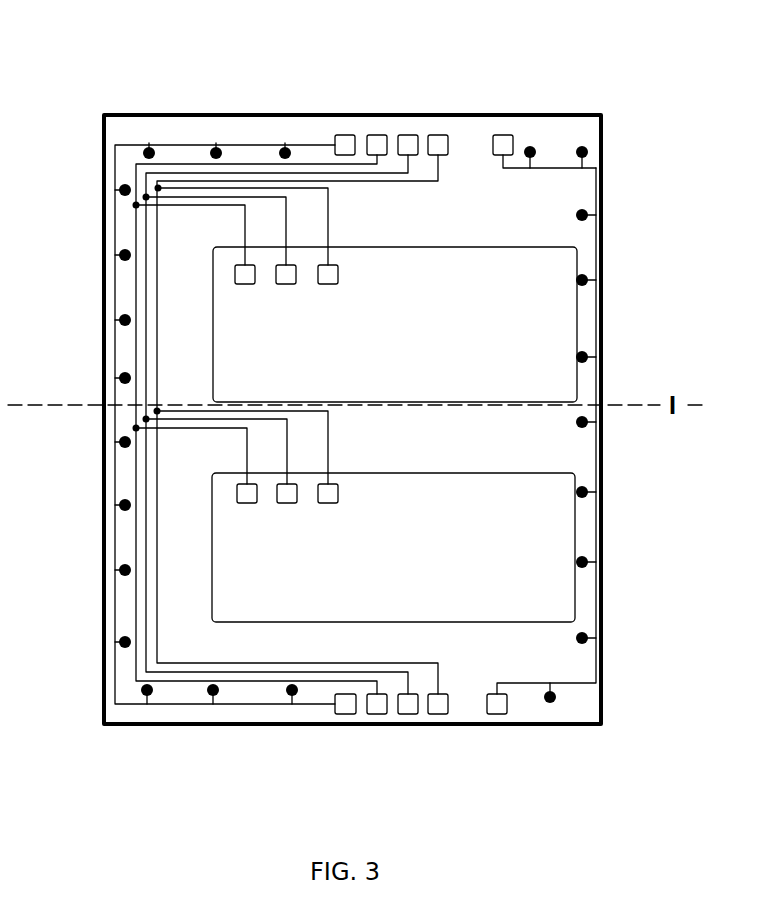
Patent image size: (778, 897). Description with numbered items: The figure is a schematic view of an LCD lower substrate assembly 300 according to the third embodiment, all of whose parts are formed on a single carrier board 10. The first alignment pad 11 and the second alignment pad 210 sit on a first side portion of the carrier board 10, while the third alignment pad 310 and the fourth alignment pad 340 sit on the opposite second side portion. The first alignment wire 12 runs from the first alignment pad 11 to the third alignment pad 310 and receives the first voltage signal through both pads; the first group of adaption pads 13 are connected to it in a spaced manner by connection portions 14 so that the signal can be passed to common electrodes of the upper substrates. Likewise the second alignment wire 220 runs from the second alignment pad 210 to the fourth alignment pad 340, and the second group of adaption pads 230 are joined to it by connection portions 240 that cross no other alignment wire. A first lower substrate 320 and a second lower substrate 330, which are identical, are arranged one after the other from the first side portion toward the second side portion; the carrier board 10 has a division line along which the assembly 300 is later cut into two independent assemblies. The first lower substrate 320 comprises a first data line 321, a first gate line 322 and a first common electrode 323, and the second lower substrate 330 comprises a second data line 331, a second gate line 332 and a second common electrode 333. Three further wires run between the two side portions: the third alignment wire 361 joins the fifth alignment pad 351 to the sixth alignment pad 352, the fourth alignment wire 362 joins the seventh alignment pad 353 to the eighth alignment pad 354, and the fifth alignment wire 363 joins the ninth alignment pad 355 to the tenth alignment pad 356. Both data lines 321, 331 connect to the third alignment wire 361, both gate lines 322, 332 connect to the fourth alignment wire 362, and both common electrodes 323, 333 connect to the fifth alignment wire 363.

The LCD lower substrate assembly 300 is at (200, 36).
The carrier board 10 is at (583, 113).
The first alignment pad 11 is at (343, 135).
The first alignment wire 12 is at (127, 143).
The first group of adaption pads 13 is at (125, 188).
The connection portions 14 is at (135, 202).
The second alignment pad 210 is at (506, 135).
The second alignment wire 220 is at (557, 167).
The second group of adaption pads 230 is at (588, 200).
The connection portions 240 is at (597, 232).
The third alignment pad 310 is at (345, 714).
The first lower substrate 320 is at (560, 335).
The first data line 321 is at (243, 282).
The first gate line 322 is at (287, 284).
The first common electrode 323 is at (330, 284).
The second lower substrate 330 is at (558, 527).
The second data line 331 is at (243, 503).
The second gate line 332 is at (285, 505).
The second common electrode 333 is at (328, 505).
The fourth alignment pad 340 is at (500, 714).
The fifth alignment pad 351 is at (377, 135).
The sixth alignment pad 352 is at (378, 714).
The seventh alignment pad 353 is at (408, 135).
The eighth alignment pad 354 is at (407, 714).
The ninth alignment pad 355 is at (437, 135).
The tenth alignment pad 356 is at (438, 714).
The third alignment wire 361 is at (145, 417).
The fourth alignment wire 362 is at (146, 463).
The fifth alignment wire 363 is at (156, 490).